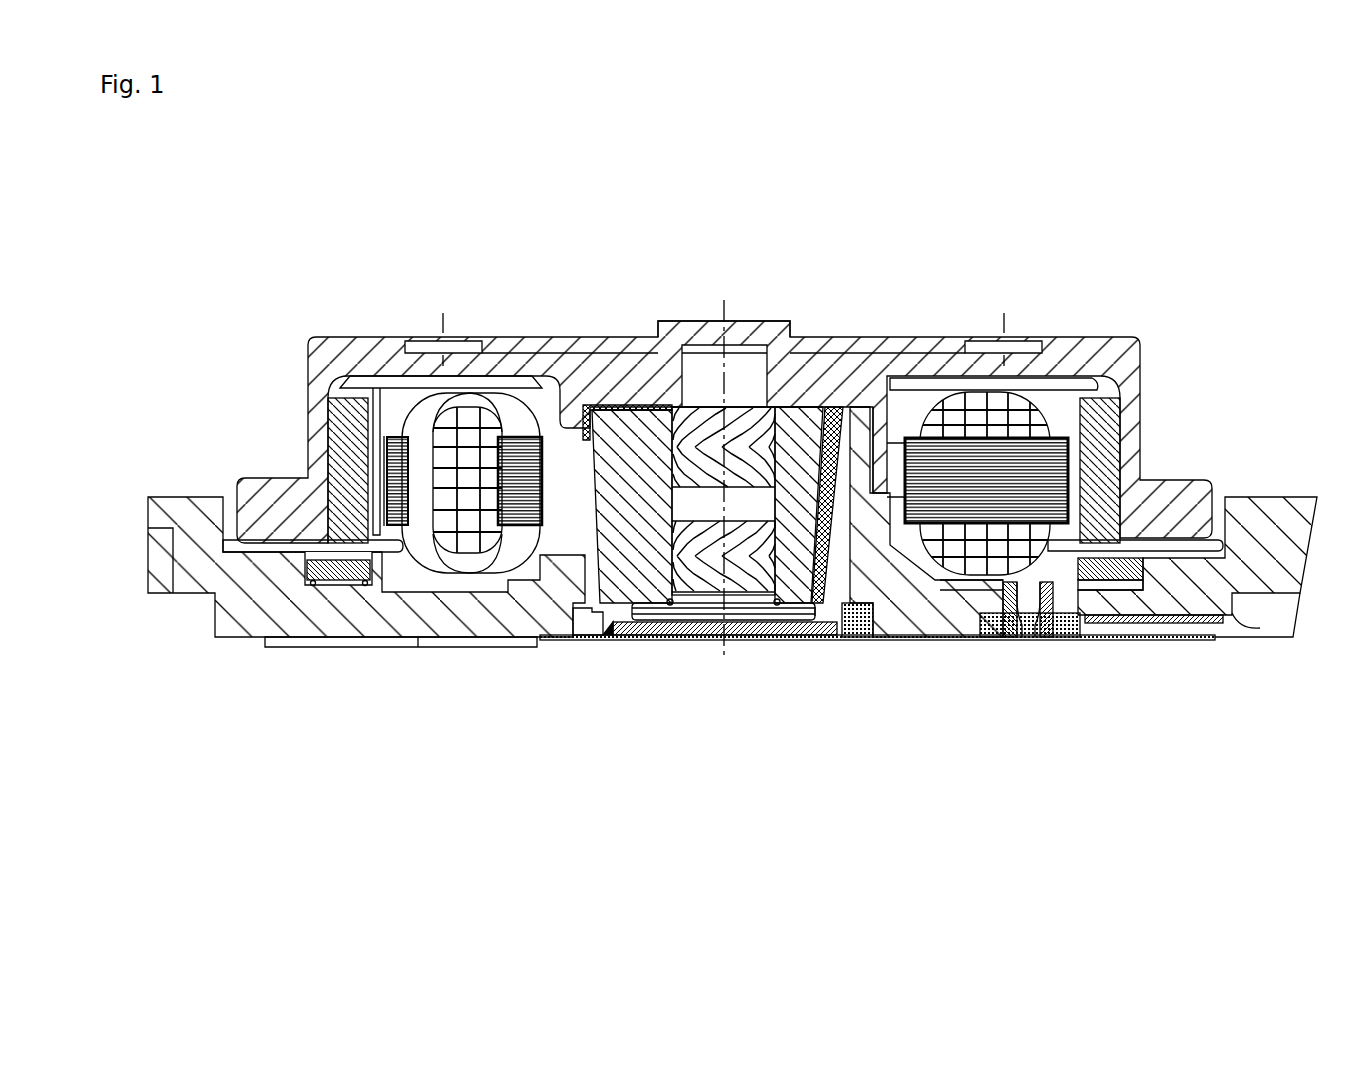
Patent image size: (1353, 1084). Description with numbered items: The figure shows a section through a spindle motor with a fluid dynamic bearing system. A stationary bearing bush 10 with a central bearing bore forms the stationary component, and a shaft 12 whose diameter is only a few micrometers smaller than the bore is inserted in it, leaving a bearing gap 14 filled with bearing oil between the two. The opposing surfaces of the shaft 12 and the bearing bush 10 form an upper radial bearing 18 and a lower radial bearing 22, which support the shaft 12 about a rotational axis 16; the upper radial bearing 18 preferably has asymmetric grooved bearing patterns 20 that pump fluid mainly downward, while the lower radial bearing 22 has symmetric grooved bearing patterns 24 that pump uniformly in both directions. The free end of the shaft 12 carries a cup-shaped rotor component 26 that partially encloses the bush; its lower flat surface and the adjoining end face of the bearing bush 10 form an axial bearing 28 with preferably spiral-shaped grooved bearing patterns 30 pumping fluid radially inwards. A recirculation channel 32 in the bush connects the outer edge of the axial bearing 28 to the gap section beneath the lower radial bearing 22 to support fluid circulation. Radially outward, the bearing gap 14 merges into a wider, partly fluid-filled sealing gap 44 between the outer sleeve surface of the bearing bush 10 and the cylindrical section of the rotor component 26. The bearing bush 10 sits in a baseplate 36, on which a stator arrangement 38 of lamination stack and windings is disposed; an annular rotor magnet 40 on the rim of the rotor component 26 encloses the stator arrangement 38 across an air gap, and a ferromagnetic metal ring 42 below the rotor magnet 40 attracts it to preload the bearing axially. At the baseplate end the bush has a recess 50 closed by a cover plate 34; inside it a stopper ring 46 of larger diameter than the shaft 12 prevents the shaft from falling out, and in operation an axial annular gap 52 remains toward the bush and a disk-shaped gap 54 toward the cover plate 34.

The bearing bush 10 is at (615, 520).
The shaft 12 is at (735, 578).
The bearing gap 14 is at (815, 420).
The rotational axis 16 is at (724, 320).
The upper radial bearing 18 is at (637, 410).
The grooved bearing patterns 20 is at (710, 440).
The lower radial bearing 22 is at (752, 600).
The grooved bearing patterns 24 is at (720, 572).
The rotor component 26 is at (545, 360).
The axial bearing 28 is at (633, 405).
The grooved bearing patterns 30 is at (793, 400).
The recirculation channel 32 is at (855, 427).
The cover plate 34 is at (638, 632).
The baseplate 36 is at (297, 628).
The stator arrangement 38 is at (980, 497).
The rotor magnet 40 is at (338, 412).
The ferromagnetic metal ring 42 is at (1105, 587).
The sealing gap 44 is at (885, 413).
The stopper ring 46 is at (805, 612).
The recess 50 is at (644, 603).
The axial annular gap 52 is at (590, 612).
The disk-shaped gap 54 is at (767, 612).